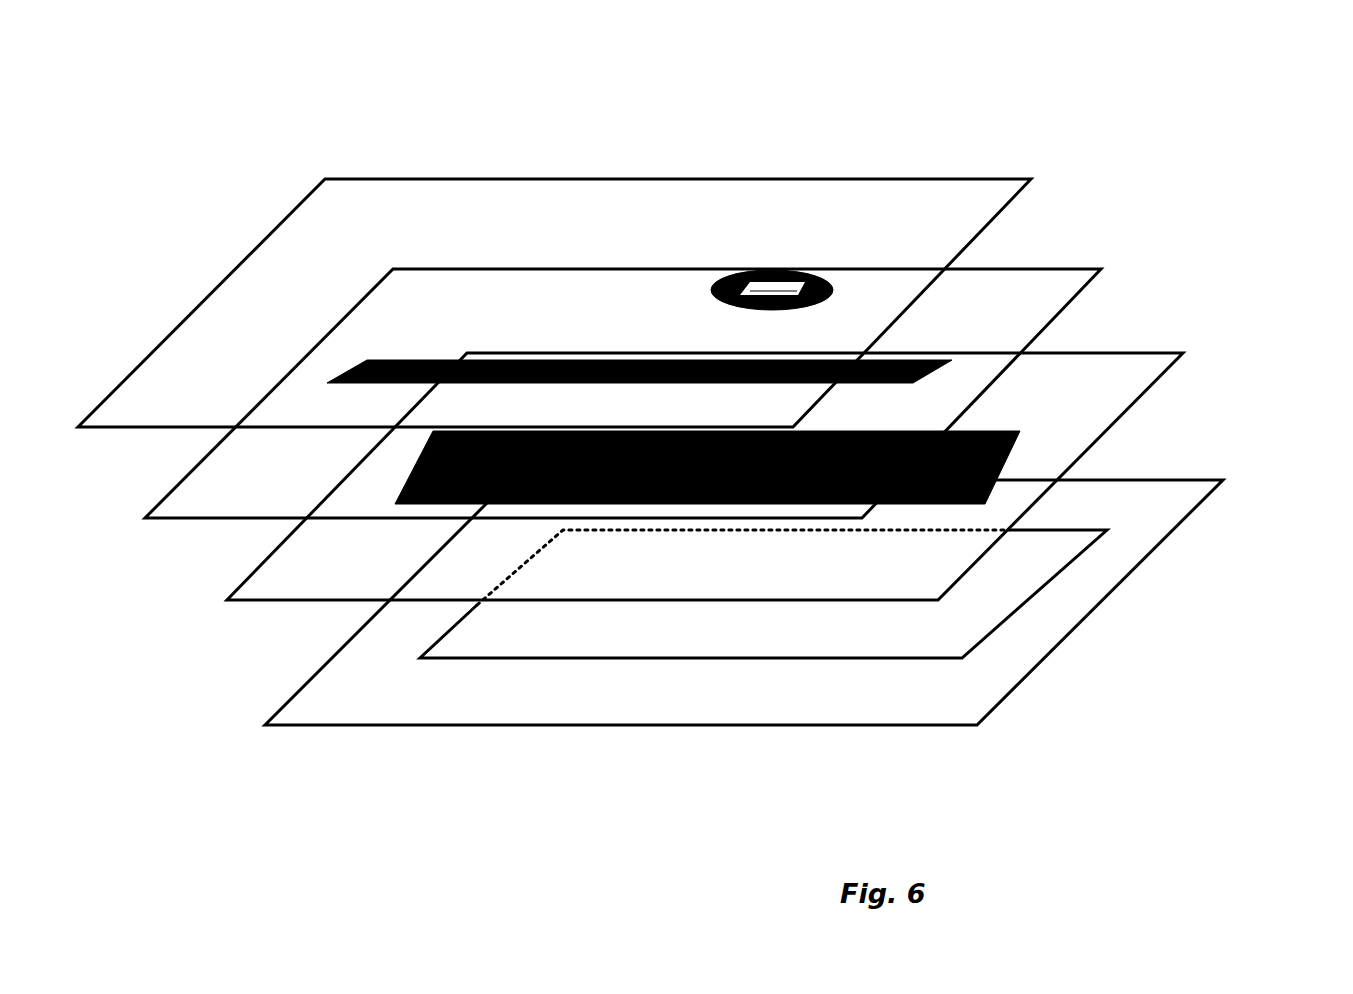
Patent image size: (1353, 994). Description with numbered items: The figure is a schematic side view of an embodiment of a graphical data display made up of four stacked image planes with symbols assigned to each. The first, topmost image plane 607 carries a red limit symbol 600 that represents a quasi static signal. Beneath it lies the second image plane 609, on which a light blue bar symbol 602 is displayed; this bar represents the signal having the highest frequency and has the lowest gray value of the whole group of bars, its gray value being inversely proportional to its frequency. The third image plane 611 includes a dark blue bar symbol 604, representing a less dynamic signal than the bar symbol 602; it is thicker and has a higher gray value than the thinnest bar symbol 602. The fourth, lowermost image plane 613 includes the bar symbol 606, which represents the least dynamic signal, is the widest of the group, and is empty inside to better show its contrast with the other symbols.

The red limit symbol 600 is at (777, 269).
The light blue bar symbol 602 is at (947, 367).
The dark blue bar symbol 604 is at (1080, 480).
The bar symbol 606 is at (1057, 588).
The topmost image plane 607 is at (967, 179).
The second image plane 609 is at (1093, 270).
The third image plane 611 is at (1173, 353).
The lowermost image plane 613 is at (1040, 680).